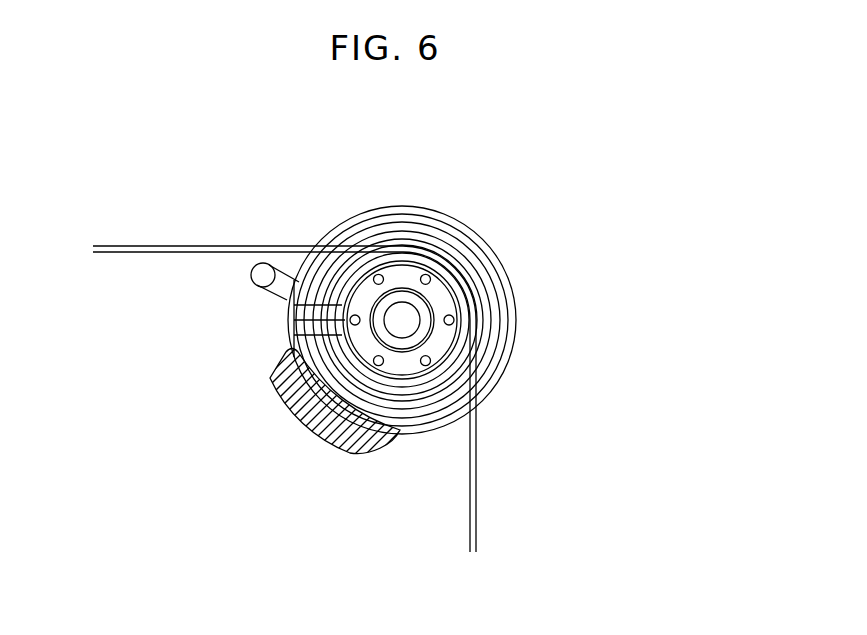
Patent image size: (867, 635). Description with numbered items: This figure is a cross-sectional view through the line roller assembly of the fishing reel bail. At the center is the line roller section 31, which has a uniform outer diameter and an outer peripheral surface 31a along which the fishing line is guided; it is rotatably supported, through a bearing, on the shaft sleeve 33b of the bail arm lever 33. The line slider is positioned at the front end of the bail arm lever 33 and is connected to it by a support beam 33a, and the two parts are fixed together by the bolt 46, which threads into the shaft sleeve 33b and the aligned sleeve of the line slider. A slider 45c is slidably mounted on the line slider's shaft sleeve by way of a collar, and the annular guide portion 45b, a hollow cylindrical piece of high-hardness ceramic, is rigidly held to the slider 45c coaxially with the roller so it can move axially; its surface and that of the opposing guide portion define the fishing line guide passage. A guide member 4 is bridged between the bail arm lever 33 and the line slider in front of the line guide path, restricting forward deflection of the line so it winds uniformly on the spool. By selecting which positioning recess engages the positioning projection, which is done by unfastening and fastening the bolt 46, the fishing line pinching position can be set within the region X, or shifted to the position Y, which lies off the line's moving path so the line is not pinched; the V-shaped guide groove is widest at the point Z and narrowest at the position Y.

The guide member 4 is at (251, 276).
The line roller section 31 is at (294, 320).
The outer peripheral surface 31a is at (294, 305).
The bail arm lever 33 is at (288, 337).
The support beam 33a is at (326, 455).
The shaft sleeve 33b is at (415, 342).
The annular guide portion 45b is at (450, 255).
The slider 45c is at (421, 243).
The bolt 46 is at (398, 345).
The fishing line pinching region X is at (414, 336).
The fishing line nipping position Y is at (402, 320).
The largest open area point Z is at (402, 320).